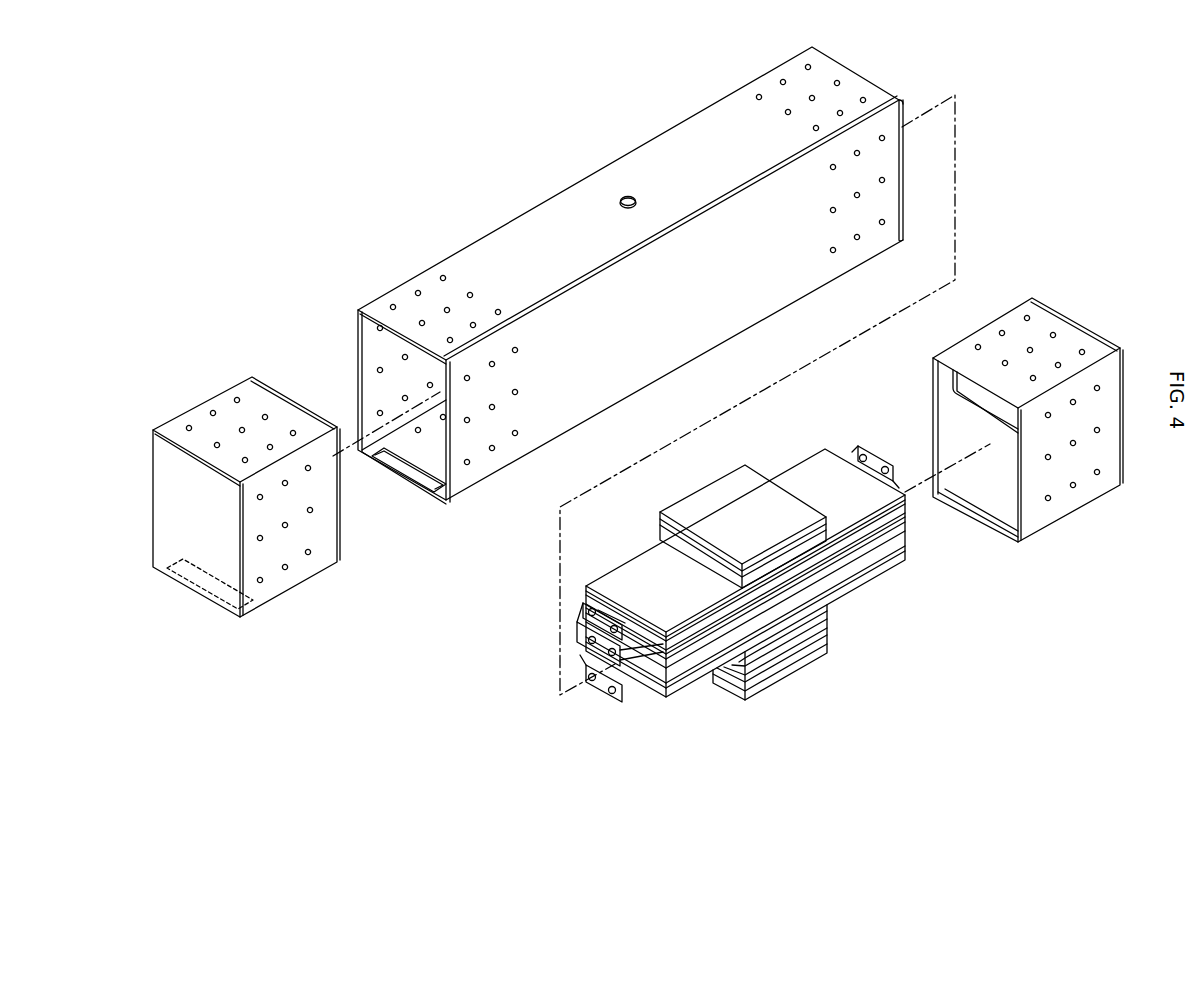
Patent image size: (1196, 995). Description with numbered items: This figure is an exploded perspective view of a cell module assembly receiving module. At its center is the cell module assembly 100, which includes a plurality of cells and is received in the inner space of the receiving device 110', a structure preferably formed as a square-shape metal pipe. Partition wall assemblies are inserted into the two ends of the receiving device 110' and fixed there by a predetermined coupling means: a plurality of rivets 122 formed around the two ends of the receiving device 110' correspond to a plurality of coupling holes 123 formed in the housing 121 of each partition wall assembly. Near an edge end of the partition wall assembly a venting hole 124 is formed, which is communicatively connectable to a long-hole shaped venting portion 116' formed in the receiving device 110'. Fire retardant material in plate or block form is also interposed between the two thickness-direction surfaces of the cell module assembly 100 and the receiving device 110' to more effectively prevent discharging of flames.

The receiving device 110' is at (630, 302).
The venting portion 116' is at (409, 503).
The housing 121 is at (248, 392).
The rivet 122 is at (468, 424).
The coupling hole 123 is at (262, 540).
The venting hole 124 is at (215, 590).
The cell module assembly 100 is at (835, 663).